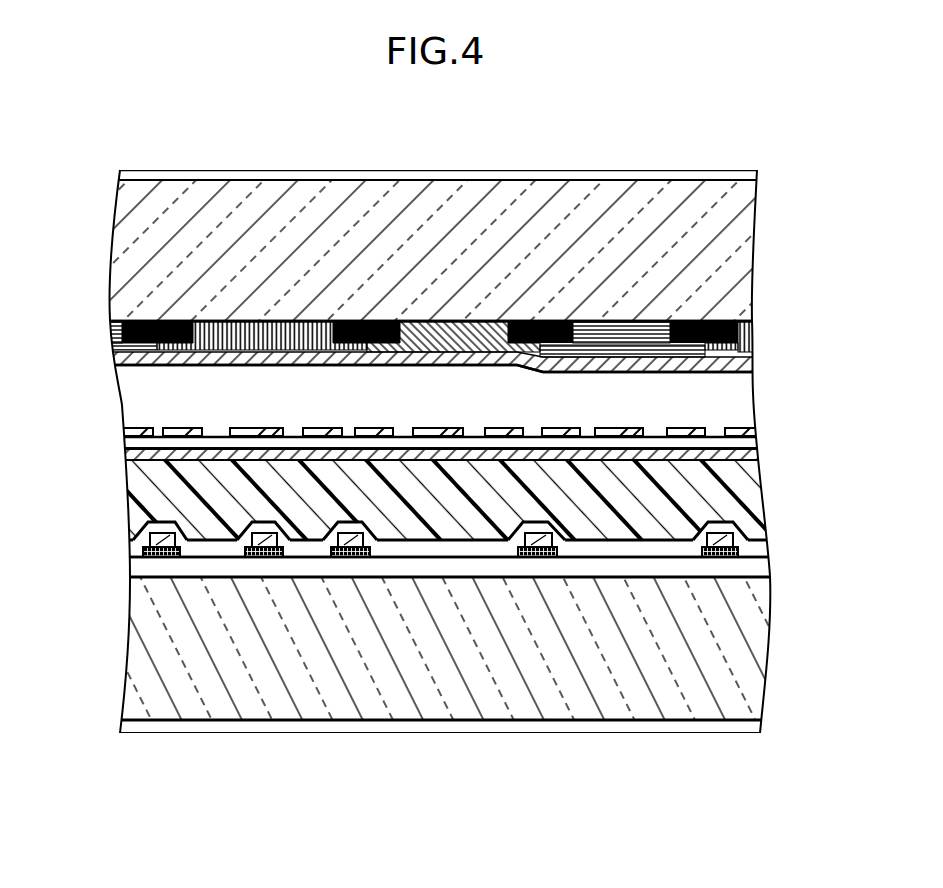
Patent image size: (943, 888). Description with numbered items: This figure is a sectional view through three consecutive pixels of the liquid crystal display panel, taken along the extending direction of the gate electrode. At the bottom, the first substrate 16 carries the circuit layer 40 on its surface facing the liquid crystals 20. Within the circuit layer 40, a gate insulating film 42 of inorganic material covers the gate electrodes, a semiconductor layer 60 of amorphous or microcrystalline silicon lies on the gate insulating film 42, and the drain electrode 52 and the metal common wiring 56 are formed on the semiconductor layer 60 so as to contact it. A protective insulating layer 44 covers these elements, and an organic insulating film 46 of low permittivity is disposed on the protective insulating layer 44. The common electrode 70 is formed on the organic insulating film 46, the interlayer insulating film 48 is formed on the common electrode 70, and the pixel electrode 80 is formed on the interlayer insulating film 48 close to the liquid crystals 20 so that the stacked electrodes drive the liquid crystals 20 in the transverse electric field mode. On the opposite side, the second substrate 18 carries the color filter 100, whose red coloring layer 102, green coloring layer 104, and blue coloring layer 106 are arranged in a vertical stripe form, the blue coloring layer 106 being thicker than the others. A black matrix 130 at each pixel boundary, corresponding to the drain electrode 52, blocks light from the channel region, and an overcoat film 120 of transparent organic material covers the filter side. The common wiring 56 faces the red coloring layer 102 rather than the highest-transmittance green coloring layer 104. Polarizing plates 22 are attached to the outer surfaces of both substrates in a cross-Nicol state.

The first substrate 16 is at (450, 687).
The second substrate 18 is at (223, 210).
The liquid crystals 20 is at (742, 390).
The polarizing plate 22 is at (159, 178).
The circuit layer 40 is at (117, 547).
The gate insulating film 42 is at (750, 567).
The protective insulating layer 44 is at (728, 527).
The organic insulating film 46 is at (742, 492).
The interlayer insulating film 48 is at (133, 445).
The drain electrode 52 is at (160, 553).
The common wiring 56 is at (265, 546).
The semiconductor layer 60 is at (170, 541).
The common electrode 70 is at (137, 453).
The pixel electrode 80 is at (183, 430).
The color filter 100 is at (762, 333).
The red coloring layer 102 is at (285, 335).
The green coloring layer 104 is at (456, 335).
The blue coloring layer 106 is at (624, 345).
The overcoat film 120 is at (743, 360).
The black matrix 130 is at (364, 330).